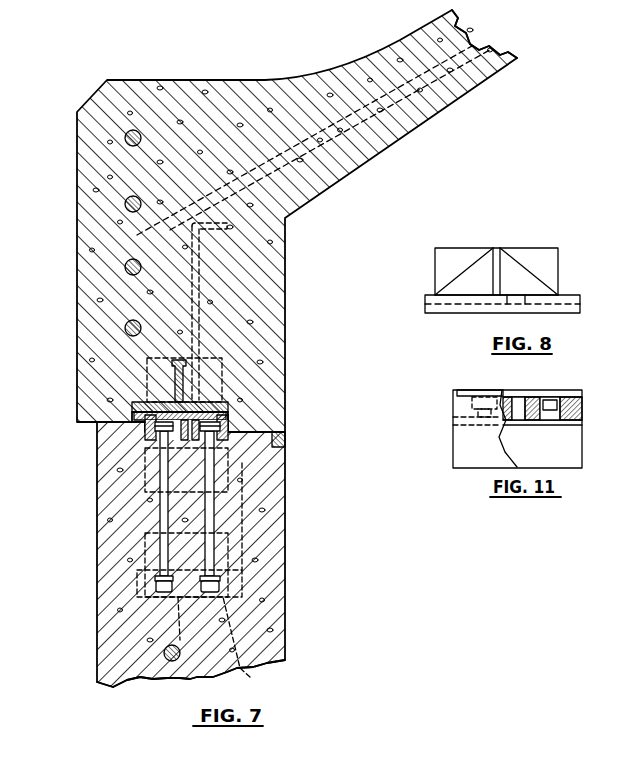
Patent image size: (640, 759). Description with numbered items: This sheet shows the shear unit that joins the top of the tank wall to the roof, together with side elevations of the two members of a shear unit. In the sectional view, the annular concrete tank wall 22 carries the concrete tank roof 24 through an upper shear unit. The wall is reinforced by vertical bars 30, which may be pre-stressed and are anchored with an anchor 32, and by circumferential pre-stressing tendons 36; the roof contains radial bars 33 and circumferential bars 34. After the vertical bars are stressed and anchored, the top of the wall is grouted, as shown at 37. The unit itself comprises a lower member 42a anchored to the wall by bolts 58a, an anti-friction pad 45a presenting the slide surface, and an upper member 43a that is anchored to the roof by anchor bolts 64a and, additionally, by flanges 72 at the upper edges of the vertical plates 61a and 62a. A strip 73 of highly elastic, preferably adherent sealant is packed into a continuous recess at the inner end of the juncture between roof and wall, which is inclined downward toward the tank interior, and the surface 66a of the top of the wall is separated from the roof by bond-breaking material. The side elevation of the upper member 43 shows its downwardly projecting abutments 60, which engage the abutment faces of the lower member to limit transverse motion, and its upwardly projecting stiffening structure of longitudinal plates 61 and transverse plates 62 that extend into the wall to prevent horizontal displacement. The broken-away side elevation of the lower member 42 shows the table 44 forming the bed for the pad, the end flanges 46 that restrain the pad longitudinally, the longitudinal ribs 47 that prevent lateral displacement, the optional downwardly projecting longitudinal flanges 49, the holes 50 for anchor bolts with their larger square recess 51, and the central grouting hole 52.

In FIG. 7, the annular concrete tank wall 22 is at (183, 567).
In FIG. 7, the concrete tank roof 24 is at (437, 107).
In FIG. 7, the vertical bars 30 is at (200, 677).
In FIG. 7, the anchor 32 is at (249, 643).
In FIG. 7, the radial bars 33 is at (476, 38).
In FIG. 7, the circumferential bars 34 is at (125, 139).
In FIG. 7, the circumferential pre-stressing tendons 36 is at (166, 661).
In FIG. 7, the grout 37 is at (116, 483).
In FIG. 7, the lower member 42a is at (150, 432).
In FIG. 7, the upper member 43a is at (180, 484).
In FIG. 7, the anti-friction pad 45a is at (218, 403).
In FIG. 7, the bolts 58a is at (212, 517).
In FIG. 7, the vertical plate 61a is at (232, 360).
In FIG. 7, the vertical plate 62a is at (221, 375).
In FIG. 7, the anchor bolts 64a is at (197, 298).
In FIG. 7, the surface of the top of the wall 66a is at (230, 433).
In FIG. 7, the flanges 72 is at (183, 371).
In FIG. 7, the strip of sealant 73 is at (285, 437).
In FIG. 8, the upper member 43 is at (499, 305).
In FIG. 8, the abutments 60 is at (582, 311).
In FIG. 8, the longitudinal plates 61 is at (540, 254).
In FIG. 8, the transverse plates 62 is at (494, 249).
In FIG. 11, the lower member 42 is at (510, 428).
In FIG. 11, the table 44 is at (535, 398).
In FIG. 11, the flanges 46 is at (459, 390).
In FIG. 11, the longitudinal ribs 47 is at (489, 392).
In FIG. 11, the downwardly projecting longitudinal flanges 49 is at (488, 462).
In FIG. 11, the holes 50 is at (546, 412).
In FIG. 11, the square recess 51 is at (556, 398).
In FIG. 11, the central grouting hole 52 is at (517, 398).